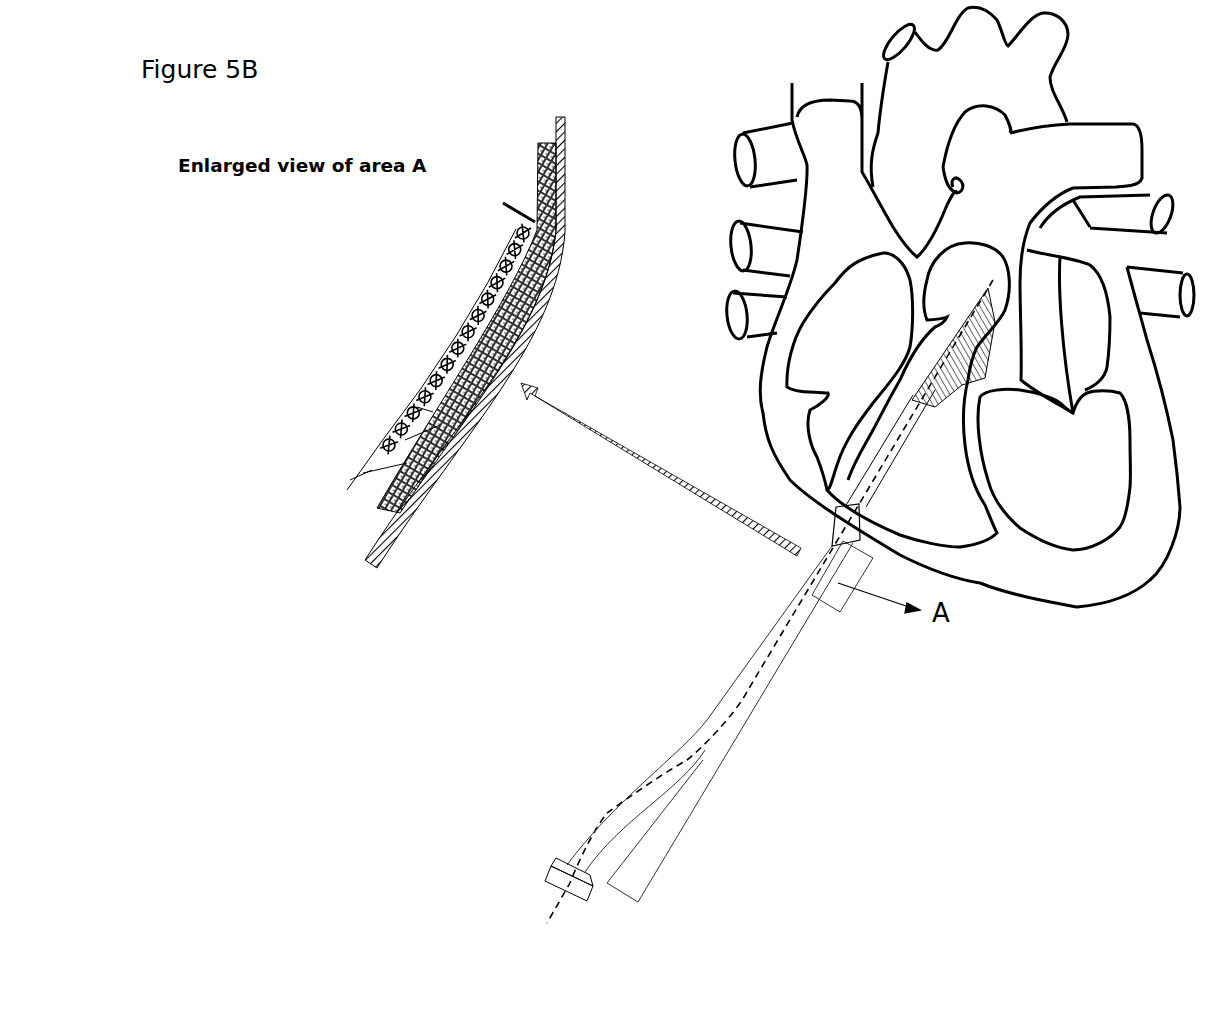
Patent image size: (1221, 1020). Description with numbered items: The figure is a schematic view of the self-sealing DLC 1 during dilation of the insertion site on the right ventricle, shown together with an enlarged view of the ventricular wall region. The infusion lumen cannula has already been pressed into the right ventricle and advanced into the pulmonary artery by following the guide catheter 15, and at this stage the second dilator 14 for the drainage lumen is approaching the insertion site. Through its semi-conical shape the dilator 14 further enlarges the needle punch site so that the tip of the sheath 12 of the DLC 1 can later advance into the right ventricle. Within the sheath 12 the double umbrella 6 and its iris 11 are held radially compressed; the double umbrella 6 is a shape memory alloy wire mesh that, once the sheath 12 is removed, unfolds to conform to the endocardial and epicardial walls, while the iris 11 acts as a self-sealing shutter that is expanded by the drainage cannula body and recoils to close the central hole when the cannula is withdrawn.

The self-sealing DLC 1 is at (778, 688).
The double umbrella 6 is at (365, 492).
The iris 11 is at (430, 470).
The sheath 12 is at (397, 540).
The dilator 14 is at (553, 870).
The guide catheter 15 is at (702, 747).